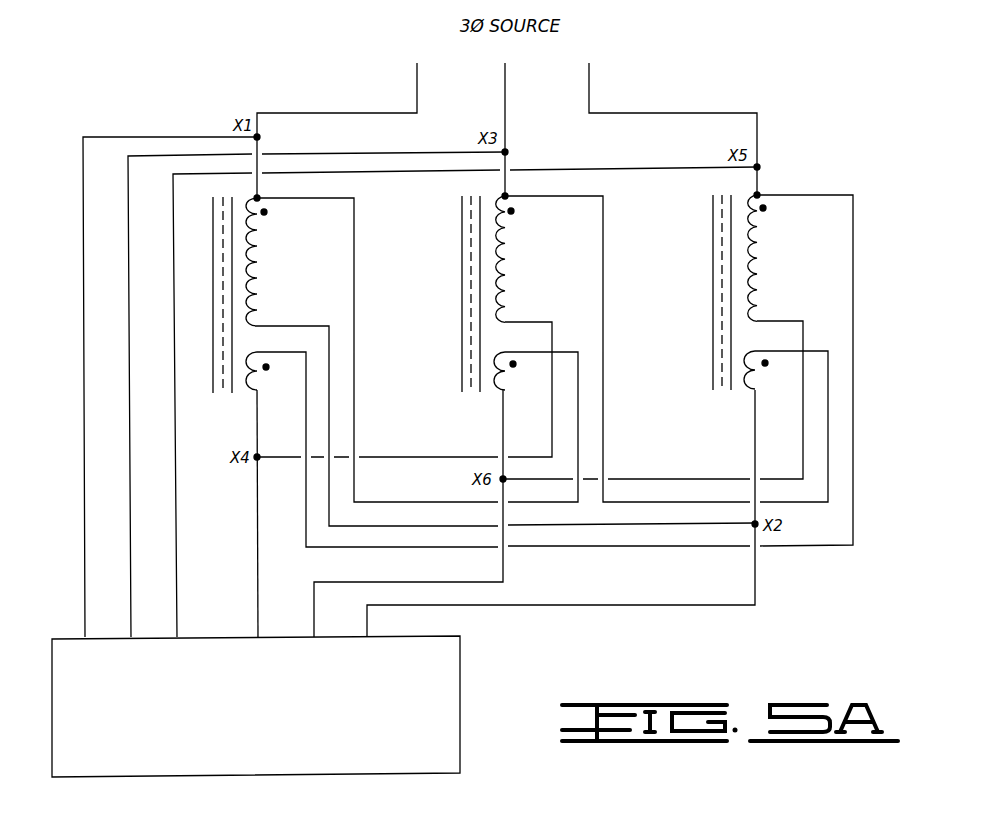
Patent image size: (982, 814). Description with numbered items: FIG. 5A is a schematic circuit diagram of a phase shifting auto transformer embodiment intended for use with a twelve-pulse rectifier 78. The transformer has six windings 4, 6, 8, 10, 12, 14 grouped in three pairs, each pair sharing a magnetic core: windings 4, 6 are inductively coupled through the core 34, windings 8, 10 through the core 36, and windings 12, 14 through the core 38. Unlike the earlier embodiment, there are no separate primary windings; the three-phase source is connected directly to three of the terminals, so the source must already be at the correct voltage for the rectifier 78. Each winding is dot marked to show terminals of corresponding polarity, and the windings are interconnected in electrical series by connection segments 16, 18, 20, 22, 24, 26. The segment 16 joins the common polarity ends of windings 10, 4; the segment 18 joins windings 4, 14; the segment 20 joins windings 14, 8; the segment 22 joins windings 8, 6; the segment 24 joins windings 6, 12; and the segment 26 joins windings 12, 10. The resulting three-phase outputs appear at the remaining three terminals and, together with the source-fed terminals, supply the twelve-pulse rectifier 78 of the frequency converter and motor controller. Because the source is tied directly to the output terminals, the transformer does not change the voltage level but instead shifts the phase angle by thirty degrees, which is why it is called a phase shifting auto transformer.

The winding 4 is at (258, 255).
The winding 6 is at (256, 380).
The winding 8 is at (501, 253).
The winding 10 is at (504, 380).
The winding 12 is at (753, 253).
The winding 14 is at (755, 380).
The connection segment 16 is at (355, 351).
The connection segment 18 is at (281, 326).
The connection segment 20 is at (795, 503).
The connection segment 22 is at (553, 340).
The connection segment 24 is at (306, 531).
The connection segment 26 is at (647, 479).
The core 34 is at (213, 298).
The core 36 is at (462, 295).
The core 38 is at (713, 289).
The rectifier 78 is at (462, 672).